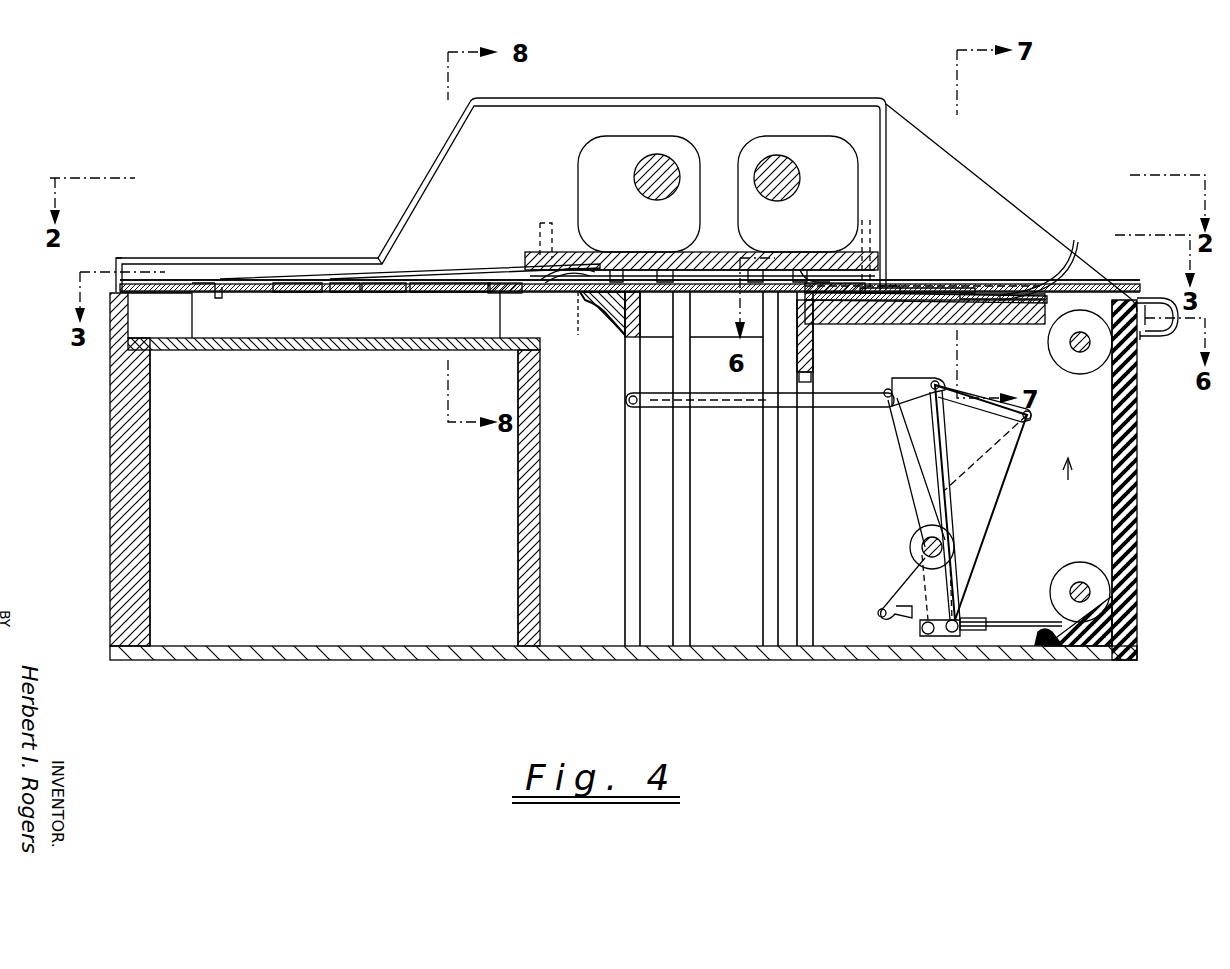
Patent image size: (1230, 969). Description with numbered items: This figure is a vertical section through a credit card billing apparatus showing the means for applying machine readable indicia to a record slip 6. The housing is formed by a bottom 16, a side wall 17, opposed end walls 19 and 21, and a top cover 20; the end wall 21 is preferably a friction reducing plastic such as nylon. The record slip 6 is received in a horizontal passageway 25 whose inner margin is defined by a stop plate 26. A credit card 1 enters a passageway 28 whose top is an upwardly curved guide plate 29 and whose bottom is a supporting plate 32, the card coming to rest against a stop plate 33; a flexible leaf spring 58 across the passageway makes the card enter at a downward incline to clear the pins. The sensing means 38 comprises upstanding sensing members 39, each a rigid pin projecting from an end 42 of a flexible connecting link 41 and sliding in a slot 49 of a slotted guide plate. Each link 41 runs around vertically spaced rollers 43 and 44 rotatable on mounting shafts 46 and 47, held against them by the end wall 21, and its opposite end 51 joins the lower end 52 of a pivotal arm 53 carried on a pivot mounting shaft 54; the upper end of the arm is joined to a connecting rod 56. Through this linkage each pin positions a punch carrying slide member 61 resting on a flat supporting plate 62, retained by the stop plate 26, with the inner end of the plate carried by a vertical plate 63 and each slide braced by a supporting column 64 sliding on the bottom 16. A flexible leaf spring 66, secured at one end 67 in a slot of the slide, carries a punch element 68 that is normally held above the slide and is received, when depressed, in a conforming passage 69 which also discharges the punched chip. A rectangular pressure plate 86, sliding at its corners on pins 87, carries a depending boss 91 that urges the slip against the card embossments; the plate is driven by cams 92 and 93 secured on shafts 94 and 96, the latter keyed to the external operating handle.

The credit card 1 is at (1048, 302).
The record slip 6 is at (896, 288).
The bottom 16 is at (810, 660).
The side wall 17 is at (509, 498).
The end wall 19 is at (122, 496).
The top cover 20 is at (818, 83).
The end wall 21 is at (1125, 490).
The horizontal passageway 25 is at (590, 282).
The stop plate 26 is at (496, 293).
The passageway 28 is at (1128, 266).
The guide plate 29 is at (1068, 262).
The supporting plate 32 is at (872, 318).
The stop plate 33 is at (813, 348).
The sensing means 38 is at (1006, 516).
The sensing member 39 is at (978, 296).
The connecting link 41 is at (1112, 484).
The end 42 is at (1003, 305).
The roller 43 is at (1082, 368).
The roller 44 is at (1055, 575).
The mounting shaft 46 is at (1075, 350).
The mounting shaft 47 is at (1080, 585).
The slot 49 is at (928, 292).
The end 51 is at (1003, 620).
The lower end 52 is at (968, 605).
The pivotal arm 53 is at (978, 472).
The pivot mounting shaft 54 is at (932, 547).
The connecting rod 56 is at (920, 390).
The leaf spring 58 is at (1178, 336).
The slide member 61 is at (630, 301).
The supporting plate 62 is at (332, 350).
The vertical plate 63 is at (518, 508).
The supporting column 64 is at (633, 482).
The leaf spring 66 is at (475, 268).
The end 67 is at (222, 295).
The punch element 68 is at (640, 270).
The passage 69 is at (602, 320).
The pressure plate 86 is at (712, 258).
The pin 87 is at (540, 245).
The boss 91 is at (806, 270).
The cam 92 is at (798, 194).
The cam 93 is at (639, 194).
The shaft 94 is at (770, 160).
The shaft 96 is at (668, 140).